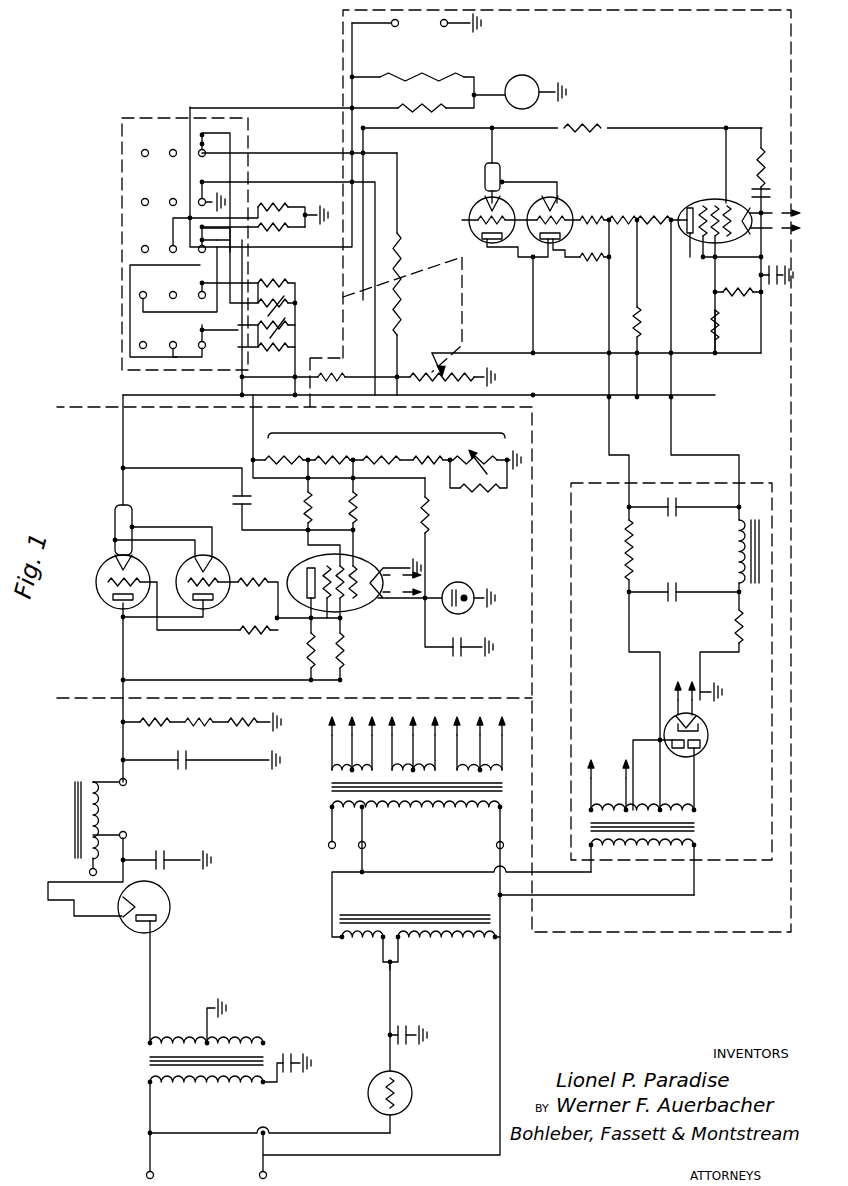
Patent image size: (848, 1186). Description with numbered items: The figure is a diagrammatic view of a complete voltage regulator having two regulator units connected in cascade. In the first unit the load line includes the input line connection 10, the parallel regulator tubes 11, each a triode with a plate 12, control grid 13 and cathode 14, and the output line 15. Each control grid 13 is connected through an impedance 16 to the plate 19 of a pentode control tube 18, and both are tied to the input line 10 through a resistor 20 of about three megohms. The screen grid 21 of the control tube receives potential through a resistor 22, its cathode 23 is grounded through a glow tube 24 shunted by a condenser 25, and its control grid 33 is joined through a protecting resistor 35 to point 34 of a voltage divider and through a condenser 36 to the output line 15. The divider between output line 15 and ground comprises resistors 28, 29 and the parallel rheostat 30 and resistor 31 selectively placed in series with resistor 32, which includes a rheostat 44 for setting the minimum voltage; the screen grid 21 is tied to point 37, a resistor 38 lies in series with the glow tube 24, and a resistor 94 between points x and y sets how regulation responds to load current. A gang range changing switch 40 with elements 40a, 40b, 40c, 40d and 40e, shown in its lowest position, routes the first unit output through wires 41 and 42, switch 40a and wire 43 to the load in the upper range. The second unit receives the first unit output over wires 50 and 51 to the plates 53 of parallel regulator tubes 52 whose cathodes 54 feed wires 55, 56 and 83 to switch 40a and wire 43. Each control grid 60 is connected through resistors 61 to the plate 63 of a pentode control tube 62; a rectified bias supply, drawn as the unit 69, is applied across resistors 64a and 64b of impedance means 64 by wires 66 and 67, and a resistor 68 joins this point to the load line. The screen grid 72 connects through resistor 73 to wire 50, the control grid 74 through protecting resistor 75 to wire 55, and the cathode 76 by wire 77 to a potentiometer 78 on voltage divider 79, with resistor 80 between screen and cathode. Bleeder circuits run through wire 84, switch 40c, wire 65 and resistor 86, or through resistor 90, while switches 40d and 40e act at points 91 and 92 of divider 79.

The input line connection 10 is at (122, 687).
The regulator tubes 11 is at (212, 565).
The plate 12 is at (113, 607).
The control grid 13 is at (110, 583).
The cathode 14 is at (118, 565).
The output line 15 is at (122, 450).
The impedance 16 is at (252, 578).
The control tube 18 is at (360, 560).
The plate 19 is at (306, 575).
The impedance 20 is at (307, 650).
The screen grid 21 is at (330, 600).
The resistor 22 is at (345, 648).
The cathode 23 is at (383, 600).
The glow tube 24 is at (453, 582).
The condenser 25 is at (466, 652).
The resistor 28 is at (292, 296).
The resistor 29 is at (298, 304).
The rheostat 30 is at (295, 325).
The resistor 31 is at (283, 348).
The resistor 32 is at (405, 433).
The control grid 33 is at (343, 600).
The point 34 is at (350, 459).
The protecting resistor 35 is at (358, 505).
The condenser 36 is at (230, 499).
The point 37 is at (300, 459).
The resistor 38 is at (432, 512).
The range changing switch 40 is at (130, 118).
The switch element 40a is at (199, 338).
The switch element 40b is at (200, 292).
The switch element 40c is at (200, 236).
The switch element 40d is at (200, 188).
The switch element 40e is at (200, 142).
The wire 41 is at (242, 377).
The wire 42 is at (130, 278).
The wire 43 is at (343, 62).
The rheostat 44 is at (500, 460).
The wire 50 is at (252, 398).
The wire 51 is at (530, 351).
The regulator tubes 52 is at (473, 210).
The plates 53 is at (489, 248).
The cathodes 54 is at (487, 203).
The wire 55 is at (486, 150).
The wire 56 is at (489, 127).
The control grid 60 is at (540, 215).
The resistors 61 is at (587, 216).
The control tube 62 is at (688, 204).
The plate 63 is at (690, 240).
The impedance means 64 is at (652, 212).
The resistor 64a is at (664, 226).
The resistor 64b is at (622, 215).
The conductor 65 is at (172, 245).
The wire 66 is at (669, 325).
The wire 67 is at (606, 338).
The resistor 68 is at (635, 316).
The oscillator 69 is at (575, 650).
The screen grid 72 is at (704, 204).
The resistor 73 is at (710, 322).
The control grid 74 is at (715, 204).
The protecting resistor 75 is at (584, 126).
The cathode 76 is at (746, 208).
The wire 77 is at (764, 300).
The potentiometer 78 is at (405, 345).
The voltage divider 79 is at (422, 380).
The resistor 80 is at (738, 298).
The wire 83 is at (260, 282).
The wire 84 is at (240, 228).
The resistor 86 is at (270, 200).
The bleeder resistor 90 is at (300, 226).
The point 91 is at (441, 350).
The point 92 is at (396, 340).
The resistor 94 is at (312, 510).